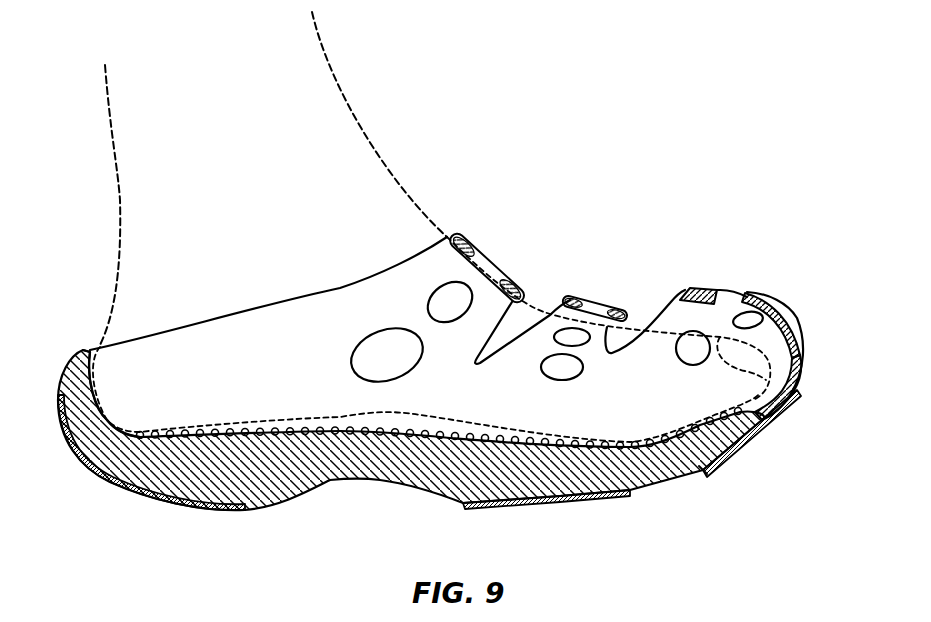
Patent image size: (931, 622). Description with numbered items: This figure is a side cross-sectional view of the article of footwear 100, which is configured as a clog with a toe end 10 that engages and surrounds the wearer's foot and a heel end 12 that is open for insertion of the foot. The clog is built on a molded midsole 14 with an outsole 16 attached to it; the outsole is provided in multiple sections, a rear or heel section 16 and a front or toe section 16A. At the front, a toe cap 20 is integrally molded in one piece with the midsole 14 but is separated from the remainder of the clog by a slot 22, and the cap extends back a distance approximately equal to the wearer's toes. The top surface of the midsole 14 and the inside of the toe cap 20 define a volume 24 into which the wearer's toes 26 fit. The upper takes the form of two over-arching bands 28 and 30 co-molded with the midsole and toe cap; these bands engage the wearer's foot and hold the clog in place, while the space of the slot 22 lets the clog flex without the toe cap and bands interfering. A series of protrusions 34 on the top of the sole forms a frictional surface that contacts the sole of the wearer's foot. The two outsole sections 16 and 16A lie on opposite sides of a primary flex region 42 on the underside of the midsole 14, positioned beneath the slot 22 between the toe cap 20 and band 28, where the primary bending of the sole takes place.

The toe end 10 is at (803, 388).
The heel end 12 is at (83, 350).
The midsole 14 is at (333, 480).
The outsole 16 is at (243, 508).
The toe section of outsole 16A is at (765, 425).
The toe cap 20 is at (705, 290).
The slot 22 is at (643, 313).
The volume 24 is at (747, 293).
The toes 26 is at (767, 313).
The band 28 is at (575, 302).
The band 30 is at (465, 240).
The protrusions 34 is at (583, 442).
The primary flex region 42 is at (703, 472).
The article of footwear 100 is at (672, 248).